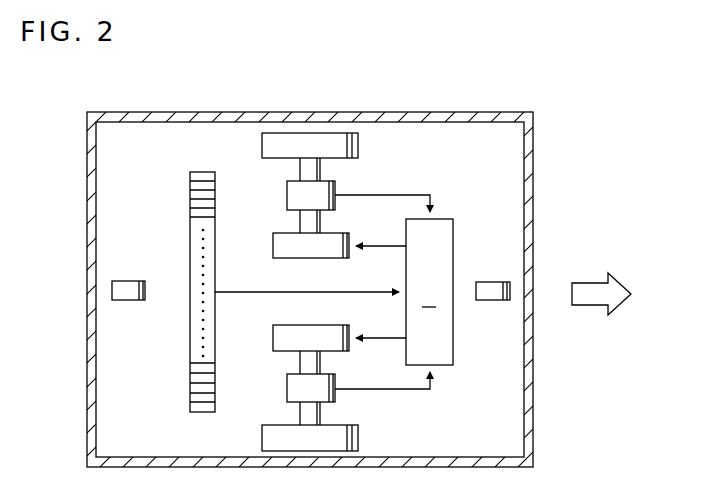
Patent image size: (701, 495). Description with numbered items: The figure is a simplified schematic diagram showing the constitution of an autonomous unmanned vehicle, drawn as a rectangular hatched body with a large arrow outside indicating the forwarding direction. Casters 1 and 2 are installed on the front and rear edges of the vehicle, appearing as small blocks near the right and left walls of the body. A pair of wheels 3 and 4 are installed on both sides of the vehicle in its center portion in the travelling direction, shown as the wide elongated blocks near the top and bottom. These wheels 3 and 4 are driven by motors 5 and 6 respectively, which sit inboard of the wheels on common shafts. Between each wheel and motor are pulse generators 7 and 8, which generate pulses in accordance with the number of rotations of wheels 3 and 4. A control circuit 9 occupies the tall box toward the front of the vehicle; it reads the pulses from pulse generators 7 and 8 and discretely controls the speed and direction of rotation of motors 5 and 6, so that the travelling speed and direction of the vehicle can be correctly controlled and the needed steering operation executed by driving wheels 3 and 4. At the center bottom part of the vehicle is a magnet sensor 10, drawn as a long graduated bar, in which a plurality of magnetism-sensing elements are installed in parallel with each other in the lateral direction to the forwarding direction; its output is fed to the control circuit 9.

The caster 1 is at (489, 300).
The caster 2 is at (122, 300).
The wheel 3 is at (359, 146).
The wheel 4 is at (359, 437).
The motor 5 is at (273, 246).
The motor 6 is at (273, 332).
The pulse generator 7 is at (287, 195).
The pulse generator 8 is at (287, 388).
The control circuit 9 is at (429, 292).
The magnet sensor 10 is at (190, 196).